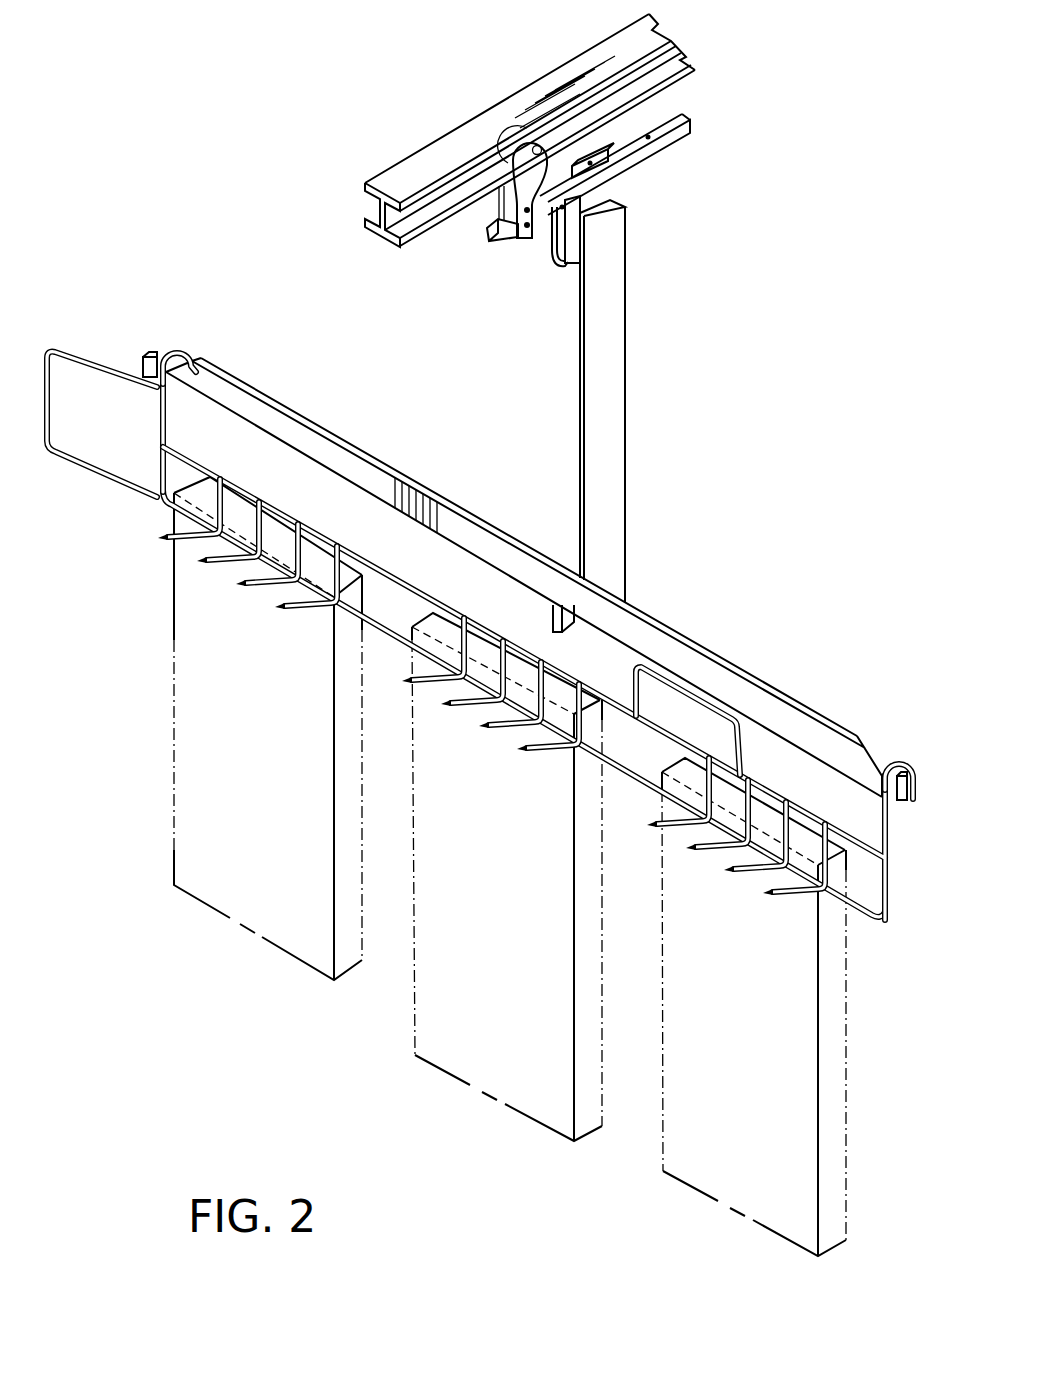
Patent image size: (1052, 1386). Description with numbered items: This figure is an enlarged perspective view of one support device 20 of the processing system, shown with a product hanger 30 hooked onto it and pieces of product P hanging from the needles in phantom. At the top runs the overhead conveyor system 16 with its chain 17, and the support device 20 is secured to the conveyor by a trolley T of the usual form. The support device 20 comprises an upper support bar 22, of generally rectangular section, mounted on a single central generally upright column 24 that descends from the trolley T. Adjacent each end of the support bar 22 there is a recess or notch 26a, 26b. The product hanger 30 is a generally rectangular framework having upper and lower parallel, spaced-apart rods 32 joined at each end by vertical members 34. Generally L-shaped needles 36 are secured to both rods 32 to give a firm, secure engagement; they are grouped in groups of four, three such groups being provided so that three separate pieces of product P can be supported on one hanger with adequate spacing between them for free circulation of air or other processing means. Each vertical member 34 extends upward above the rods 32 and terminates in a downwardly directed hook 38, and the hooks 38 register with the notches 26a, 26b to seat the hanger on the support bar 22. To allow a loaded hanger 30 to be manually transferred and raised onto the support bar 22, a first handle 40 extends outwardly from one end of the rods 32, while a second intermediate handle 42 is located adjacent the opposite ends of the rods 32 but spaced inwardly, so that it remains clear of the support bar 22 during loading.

The conveyor system 16 is at (427, 163).
The chain 17 is at (653, 143).
The trolley T is at (513, 253).
The support device 20 is at (524, 577).
The support bar 22 is at (433, 490).
The central upright column 24 is at (618, 375).
The notch 26a is at (166, 340).
The notch 26b is at (881, 745).
The product hanger 30 is at (145, 528).
The rod 32 is at (383, 567).
The vertical member 34 is at (157, 470).
The needle 36 is at (284, 604).
The hook 38 is at (173, 357).
The first handle 40 is at (98, 372).
The second intermediate handle 42 is at (683, 687).
The product P is at (257, 816).